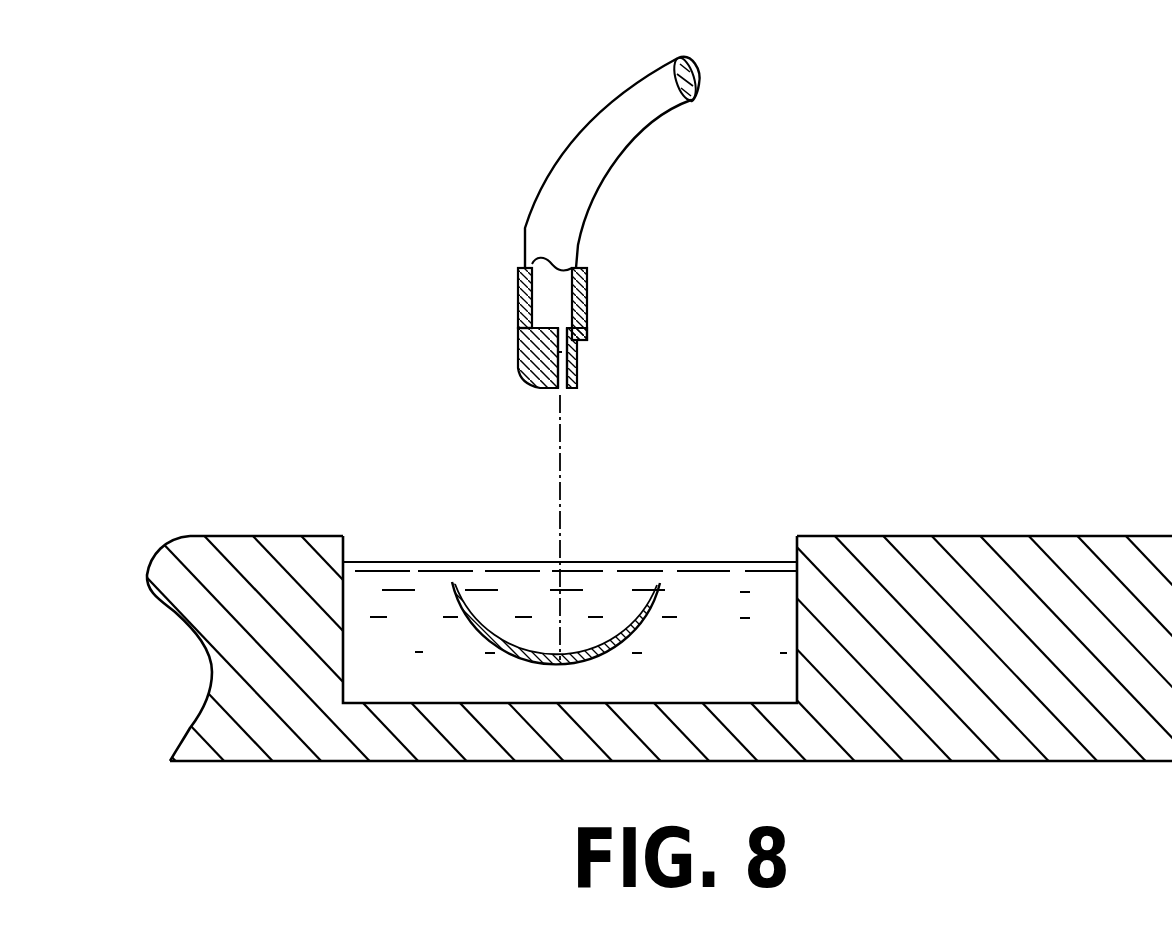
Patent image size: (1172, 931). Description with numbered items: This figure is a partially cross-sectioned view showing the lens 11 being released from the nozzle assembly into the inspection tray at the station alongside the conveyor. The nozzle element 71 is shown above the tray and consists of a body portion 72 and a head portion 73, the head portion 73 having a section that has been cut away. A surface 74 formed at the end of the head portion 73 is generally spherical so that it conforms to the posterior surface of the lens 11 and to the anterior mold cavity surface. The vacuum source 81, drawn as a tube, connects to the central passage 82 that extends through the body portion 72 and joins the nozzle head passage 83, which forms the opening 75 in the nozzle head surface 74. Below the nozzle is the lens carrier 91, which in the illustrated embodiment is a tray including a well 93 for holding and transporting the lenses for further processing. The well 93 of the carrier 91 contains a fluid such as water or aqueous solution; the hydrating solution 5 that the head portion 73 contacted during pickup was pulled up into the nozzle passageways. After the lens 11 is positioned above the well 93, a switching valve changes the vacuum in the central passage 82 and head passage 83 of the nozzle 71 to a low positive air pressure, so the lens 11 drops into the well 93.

The hydrating solution 5 is at (586, 608).
The lens 11 is at (630, 627).
The nozzle element 71 is at (590, 293).
The body portion 72 is at (518, 296).
The head portion 73 is at (580, 358).
The surface 74 is at (518, 370).
The opening 75 is at (556, 389).
The vacuum source 81 is at (605, 88).
The central passage 82 is at (553, 300).
The nozzle head passage 83 is at (518, 332).
The lens carrier 91 is at (1123, 565).
The well 93 is at (798, 576).